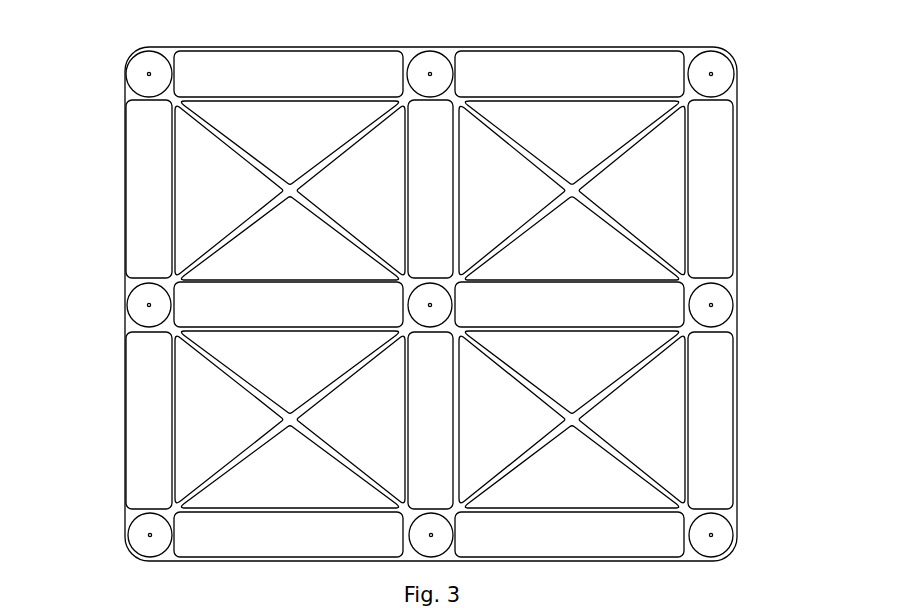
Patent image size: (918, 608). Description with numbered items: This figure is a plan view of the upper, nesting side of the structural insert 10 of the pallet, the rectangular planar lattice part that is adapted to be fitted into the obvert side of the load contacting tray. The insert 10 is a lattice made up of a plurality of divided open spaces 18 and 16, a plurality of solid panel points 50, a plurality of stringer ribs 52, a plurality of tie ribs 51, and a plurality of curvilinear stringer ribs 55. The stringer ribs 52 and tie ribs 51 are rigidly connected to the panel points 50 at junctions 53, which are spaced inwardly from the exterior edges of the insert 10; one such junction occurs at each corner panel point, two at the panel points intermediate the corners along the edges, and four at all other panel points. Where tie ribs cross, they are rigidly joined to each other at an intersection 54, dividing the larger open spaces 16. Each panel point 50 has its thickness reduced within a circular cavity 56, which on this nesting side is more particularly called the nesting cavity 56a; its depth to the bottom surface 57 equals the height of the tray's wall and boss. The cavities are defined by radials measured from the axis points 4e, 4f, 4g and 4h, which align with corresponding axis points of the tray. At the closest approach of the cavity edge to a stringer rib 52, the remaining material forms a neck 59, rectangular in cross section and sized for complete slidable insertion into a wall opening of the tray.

The structural insert 10 is at (100, 388).
The divided open spaces 16 is at (277, 152).
The divided open spaces 18 is at (275, 89).
The solid panel points 50 is at (123, 80).
The tie ribs 51 is at (605, 447).
The stringer ribs 52 is at (172, 151).
The junctions 53 is at (678, 102).
The intersection 54 is at (280, 425).
The curvilinear stringer ribs 55 is at (135, 50).
The circular cavity 56 is at (127, 283).
The nesting cavity 56a is at (688, 52).
The bottom surface 57 is at (149, 72).
The neck 59 is at (175, 80).
The axis point 4e is at (151, 538).
The axis point 4f is at (148, 75).
The axis point 4g is at (713, 74).
The axis point 4h is at (713, 535).